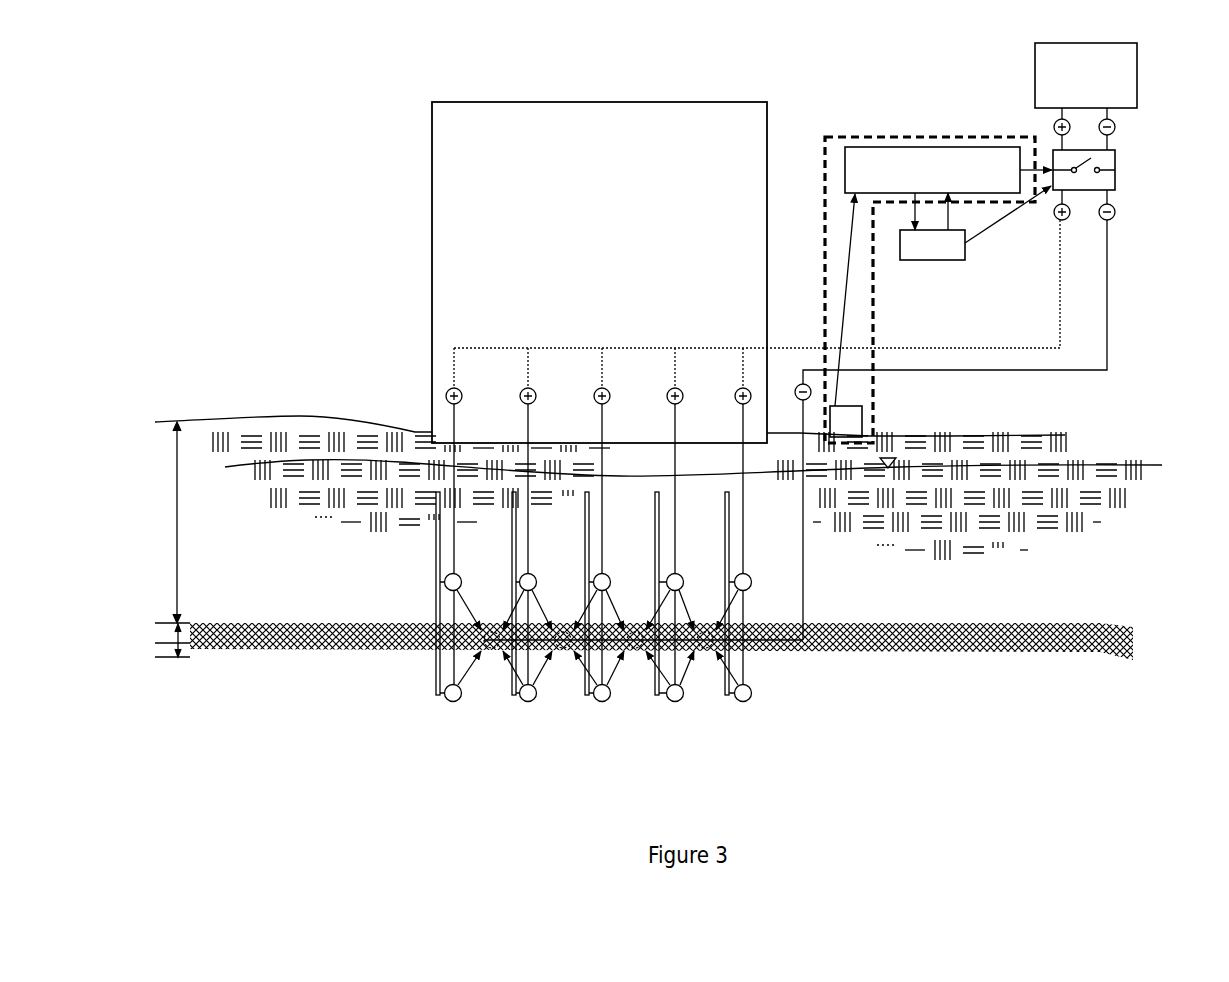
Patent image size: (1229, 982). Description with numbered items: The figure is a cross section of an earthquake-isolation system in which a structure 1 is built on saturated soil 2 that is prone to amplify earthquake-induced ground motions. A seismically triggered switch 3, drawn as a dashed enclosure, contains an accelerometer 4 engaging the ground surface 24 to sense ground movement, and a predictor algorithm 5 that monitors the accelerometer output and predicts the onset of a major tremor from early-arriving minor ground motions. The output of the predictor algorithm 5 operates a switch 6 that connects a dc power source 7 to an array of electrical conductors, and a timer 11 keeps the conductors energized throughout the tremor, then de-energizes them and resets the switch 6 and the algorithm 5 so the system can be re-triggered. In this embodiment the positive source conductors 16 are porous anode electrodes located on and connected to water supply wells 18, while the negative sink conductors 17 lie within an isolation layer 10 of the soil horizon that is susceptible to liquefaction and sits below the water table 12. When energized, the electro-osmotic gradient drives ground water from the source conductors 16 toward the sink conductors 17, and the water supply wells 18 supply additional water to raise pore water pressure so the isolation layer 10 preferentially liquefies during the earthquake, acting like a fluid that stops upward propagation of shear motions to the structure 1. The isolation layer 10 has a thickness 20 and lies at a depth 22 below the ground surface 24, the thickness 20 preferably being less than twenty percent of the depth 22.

The structure 1 is at (585, 102).
The saturated soil 2 is at (895, 611).
The seismically triggered switch 3 is at (853, 135).
The accelerometer 4 is at (862, 416).
The predictor algorithm 5 is at (930, 147).
The switch 6 is at (1115, 184).
The dc power source 7 is at (1035, 78).
The isolation layer 10 is at (1000, 631).
The timer 11 is at (940, 261).
The water table 12 is at (1162, 465).
The positive source conductors 16 is at (459, 576).
The negative sink conductors 17 is at (491, 631).
The water supply wells 18 is at (434, 549).
The thickness 20 is at (177, 646).
The depth 22 is at (177, 523).
The ground surface 24 is at (1068, 432).